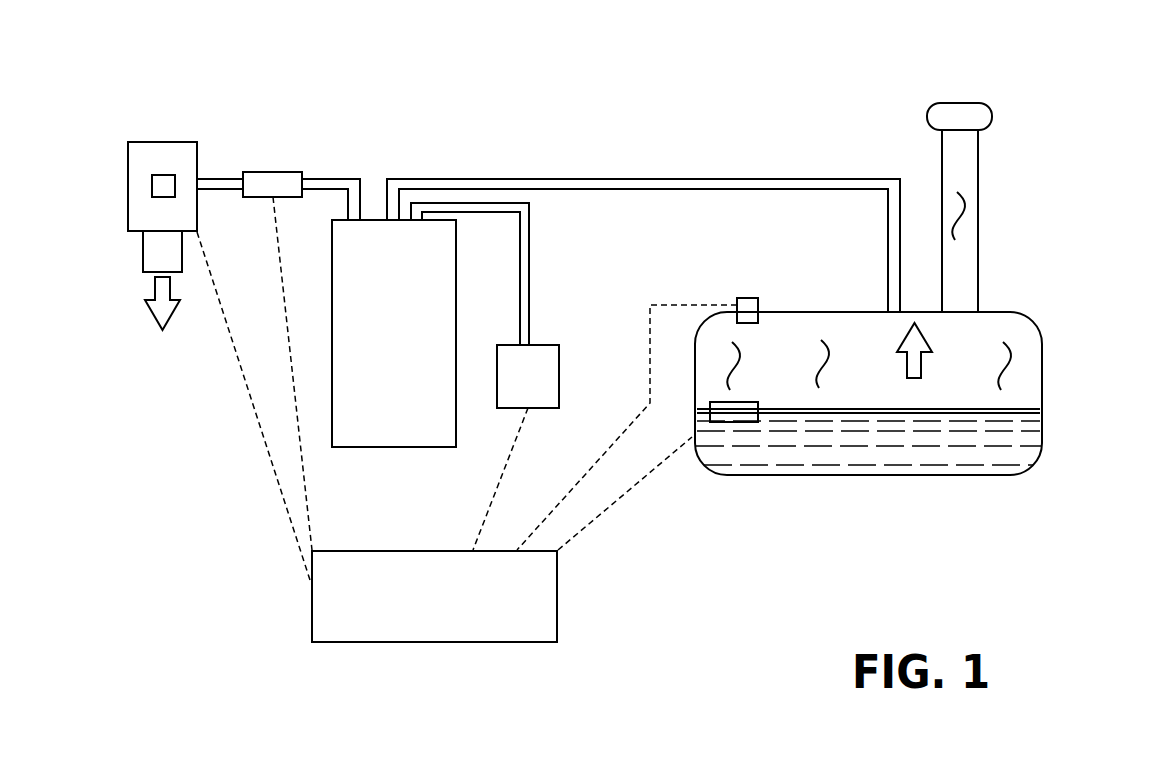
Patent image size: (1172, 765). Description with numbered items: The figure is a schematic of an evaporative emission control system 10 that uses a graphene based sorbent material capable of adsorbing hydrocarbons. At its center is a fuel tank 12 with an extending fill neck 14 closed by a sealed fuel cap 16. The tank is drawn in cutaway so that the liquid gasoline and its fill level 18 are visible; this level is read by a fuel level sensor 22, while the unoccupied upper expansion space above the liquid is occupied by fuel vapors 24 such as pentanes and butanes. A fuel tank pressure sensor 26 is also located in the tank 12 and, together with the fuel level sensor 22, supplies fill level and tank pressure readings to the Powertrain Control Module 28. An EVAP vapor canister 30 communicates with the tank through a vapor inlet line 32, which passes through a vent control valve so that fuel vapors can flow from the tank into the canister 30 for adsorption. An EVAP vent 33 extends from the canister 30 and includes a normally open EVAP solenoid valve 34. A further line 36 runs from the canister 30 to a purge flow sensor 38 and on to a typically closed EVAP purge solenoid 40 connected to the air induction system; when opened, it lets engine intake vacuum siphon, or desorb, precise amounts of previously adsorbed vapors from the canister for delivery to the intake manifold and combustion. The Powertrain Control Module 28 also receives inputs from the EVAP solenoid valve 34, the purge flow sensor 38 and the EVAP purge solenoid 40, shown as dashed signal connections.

The evaporative emission control system 10 is at (1085, 100).
The fuel tank 12 is at (1042, 360).
The fill neck 14 is at (978, 200).
The sealed fuel cap 16 is at (962, 103).
The fill level 18 is at (980, 410).
The fuel level sensor 22 is at (712, 402).
The fuel vapors 24 is at (877, 373).
The fuel tank pressure sensor 26 is at (694, 238).
The Powertrain Control Module 28 is at (415, 642).
The EVAP vapor canister 30 is at (375, 252).
The vapor inlet line 32 is at (778, 179).
The EVAP vent 33 is at (490, 214).
The EVAP solenoid valve 34 is at (548, 375).
The line 36 is at (330, 178).
The purge flow sensor 38 is at (257, 172).
The EVAP purge solenoid 40 is at (142, 142).